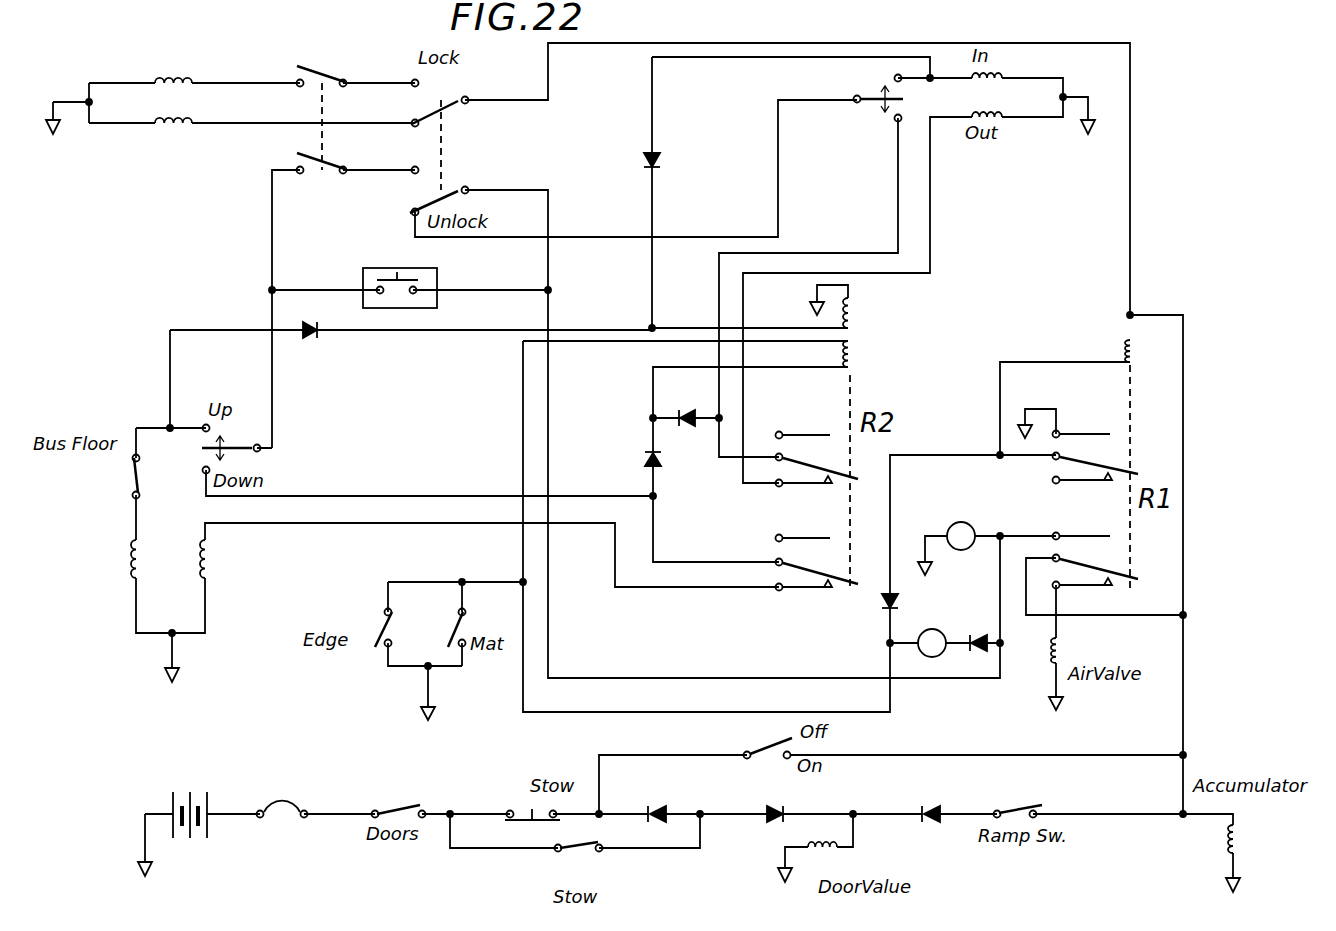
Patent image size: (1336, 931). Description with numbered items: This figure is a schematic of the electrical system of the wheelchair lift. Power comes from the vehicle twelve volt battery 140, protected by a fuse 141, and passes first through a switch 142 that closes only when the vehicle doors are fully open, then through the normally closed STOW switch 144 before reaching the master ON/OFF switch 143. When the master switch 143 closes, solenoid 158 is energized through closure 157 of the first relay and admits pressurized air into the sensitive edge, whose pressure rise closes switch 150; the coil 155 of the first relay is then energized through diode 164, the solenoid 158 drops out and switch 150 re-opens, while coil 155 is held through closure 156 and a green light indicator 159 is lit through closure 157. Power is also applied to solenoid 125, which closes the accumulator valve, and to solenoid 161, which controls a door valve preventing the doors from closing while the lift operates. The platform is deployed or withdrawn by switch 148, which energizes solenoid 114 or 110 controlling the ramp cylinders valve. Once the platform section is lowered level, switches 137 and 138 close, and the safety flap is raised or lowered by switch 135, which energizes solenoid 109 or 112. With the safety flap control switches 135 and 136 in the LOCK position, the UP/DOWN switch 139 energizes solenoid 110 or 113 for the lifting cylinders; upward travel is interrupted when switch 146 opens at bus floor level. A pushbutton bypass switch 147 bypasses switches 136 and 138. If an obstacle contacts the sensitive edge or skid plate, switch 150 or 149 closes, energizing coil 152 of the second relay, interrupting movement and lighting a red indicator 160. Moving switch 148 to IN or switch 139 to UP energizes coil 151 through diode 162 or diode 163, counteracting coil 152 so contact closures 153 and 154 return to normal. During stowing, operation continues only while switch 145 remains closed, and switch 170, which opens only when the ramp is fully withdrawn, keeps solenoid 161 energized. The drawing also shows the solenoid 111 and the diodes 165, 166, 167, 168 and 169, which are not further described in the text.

The solenoid 109 is at (174, 80).
The solenoid 112 is at (175, 126).
The switch 137 is at (299, 66).
The switch 138 is at (299, 167).
The safety flap control switch 135 is at (456, 103).
The safety flap control switch 136 is at (412, 200).
The pushbutton bypass switch 147 is at (376, 260).
The diode 162 is at (660, 163).
The switch 148 is at (866, 104).
The solenoid 114 is at (1000, 72).
The out solenoid coil 111 is at (998, 112).
The diode 163 is at (314, 340).
The UP/DOWN switch 139 is at (262, 452).
The switch 146 is at (132, 480).
The solenoid 113 is at (132, 561).
The solenoid 110 is at (210, 560).
The switch 150 is at (376, 622).
The switch 149 is at (477, 622).
The coil 151 is at (856, 312).
The coil 152 is at (856, 352).
The diode 166 is at (692, 394).
The diode 165 is at (656, 466).
The contact closure 153 is at (836, 462).
The contact closure 154 is at (836, 565).
The coil 155 is at (1126, 354).
The closure 156 is at (1116, 459).
The closure 157 is at (1122, 563).
The green light indicator 159 is at (954, 510).
The red indicator 160 is at (978, 624).
The diode 164 is at (882, 610).
The solenoid 158 is at (1086, 650).
The battery 140 is at (183, 842).
The fuse 141 is at (285, 795).
The switch 142 is at (412, 802).
The STOW switch 144 is at (508, 810).
The switch 145 is at (572, 852).
The master ON/OFF switch 143 is at (774, 736).
The diode 167 is at (658, 804).
The diode 168 is at (780, 792).
The solenoid 161 is at (830, 850).
The diode 169 is at (930, 802).
The switch 170 is at (1014, 802).
The solenoid 125 is at (1240, 838).